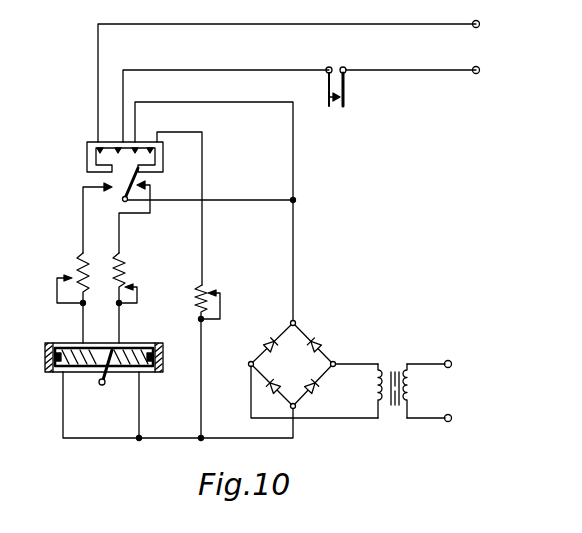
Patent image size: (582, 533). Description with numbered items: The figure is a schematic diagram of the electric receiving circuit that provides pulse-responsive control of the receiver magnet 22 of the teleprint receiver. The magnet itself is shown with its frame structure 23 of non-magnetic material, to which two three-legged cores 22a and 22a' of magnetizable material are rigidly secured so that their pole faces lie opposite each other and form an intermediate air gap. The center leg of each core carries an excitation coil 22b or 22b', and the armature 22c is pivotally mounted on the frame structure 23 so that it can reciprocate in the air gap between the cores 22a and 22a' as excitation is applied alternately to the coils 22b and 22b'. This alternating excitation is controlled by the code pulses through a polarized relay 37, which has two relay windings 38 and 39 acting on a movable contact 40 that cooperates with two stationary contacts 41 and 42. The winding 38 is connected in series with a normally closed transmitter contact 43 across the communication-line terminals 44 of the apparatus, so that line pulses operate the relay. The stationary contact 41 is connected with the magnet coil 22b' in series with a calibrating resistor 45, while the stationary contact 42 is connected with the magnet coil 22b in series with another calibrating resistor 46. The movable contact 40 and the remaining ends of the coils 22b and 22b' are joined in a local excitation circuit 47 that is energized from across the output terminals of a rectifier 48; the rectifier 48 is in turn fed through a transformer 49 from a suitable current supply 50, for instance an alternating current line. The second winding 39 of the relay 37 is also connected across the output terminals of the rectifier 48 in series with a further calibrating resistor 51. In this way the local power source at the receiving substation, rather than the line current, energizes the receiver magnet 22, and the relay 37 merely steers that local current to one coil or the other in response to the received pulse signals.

The receiver magnet 22 is at (191, 388).
The three-legged magnet core 22a is at (144, 341).
The three-legged magnet core 22a' is at (38, 387).
The excitation coil 22b is at (159, 402).
The excitation coil 22b' is at (86, 386).
The armature 22c is at (111, 349).
The frame structure 23 is at (45, 358).
The relay 37 is at (87, 157).
The relay winding 38 is at (109, 141).
The relay winding 39 is at (148, 141).
The movable contact 40 is at (116, 192).
The stationary contact 41 is at (102, 185).
The stationary contact 42 is at (148, 183).
The transmitter contact 43 is at (346, 88).
The communication-line terminals 44 is at (479, 27).
The calibrating resistor 45 is at (70, 292).
The calibrating resistor 46 is at (132, 292).
The local excitation circuit 47 is at (295, 284).
The rectifier 48 is at (303, 373).
The transformer 49 is at (394, 369).
The current supply 50 is at (451, 367).
The calibrating resistor 51 is at (206, 287).